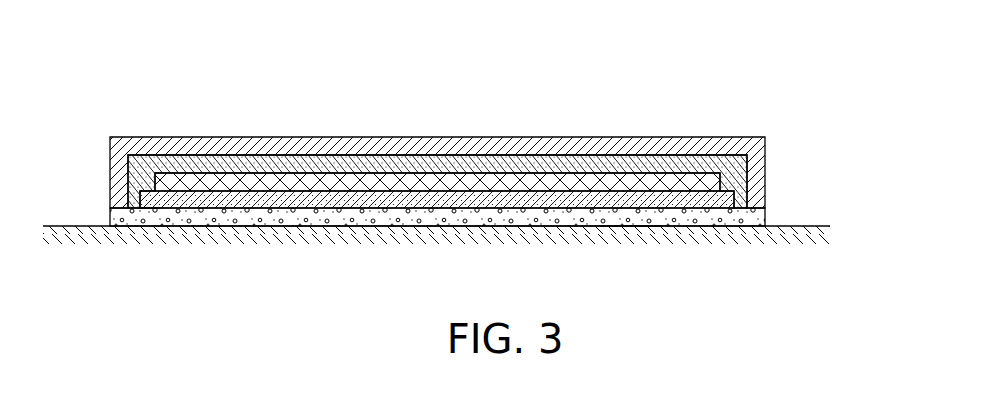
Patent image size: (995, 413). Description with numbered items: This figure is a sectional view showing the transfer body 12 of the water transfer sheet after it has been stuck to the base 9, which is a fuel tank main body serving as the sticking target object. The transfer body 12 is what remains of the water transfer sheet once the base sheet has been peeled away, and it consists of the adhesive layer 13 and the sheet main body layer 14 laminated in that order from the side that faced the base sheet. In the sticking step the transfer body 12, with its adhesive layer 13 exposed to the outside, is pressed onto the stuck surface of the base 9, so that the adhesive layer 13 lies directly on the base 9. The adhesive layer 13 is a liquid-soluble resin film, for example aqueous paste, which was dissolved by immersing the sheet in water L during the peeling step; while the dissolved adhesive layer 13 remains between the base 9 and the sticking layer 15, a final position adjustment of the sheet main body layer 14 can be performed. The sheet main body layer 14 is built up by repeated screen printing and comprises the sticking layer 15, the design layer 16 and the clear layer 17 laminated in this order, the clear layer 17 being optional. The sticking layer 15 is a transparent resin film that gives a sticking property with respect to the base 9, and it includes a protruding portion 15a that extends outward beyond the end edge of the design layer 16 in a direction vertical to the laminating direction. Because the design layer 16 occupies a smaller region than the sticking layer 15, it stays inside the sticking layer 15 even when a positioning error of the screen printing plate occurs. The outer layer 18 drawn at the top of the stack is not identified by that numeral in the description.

The base 9 is at (70, 226).
The transfer body 12 is at (862, 17).
The adhesive layer 13 is at (757, 213).
The sheet main body layer 14 is at (812, 62).
The sticking layer 15 is at (733, 200).
The protruding portion 15a is at (155, 210).
The design layer 16 is at (738, 178).
The clear layer 17 is at (752, 137).
The cover layer 18 is at (730, 137).
The water L is at (627, 224).